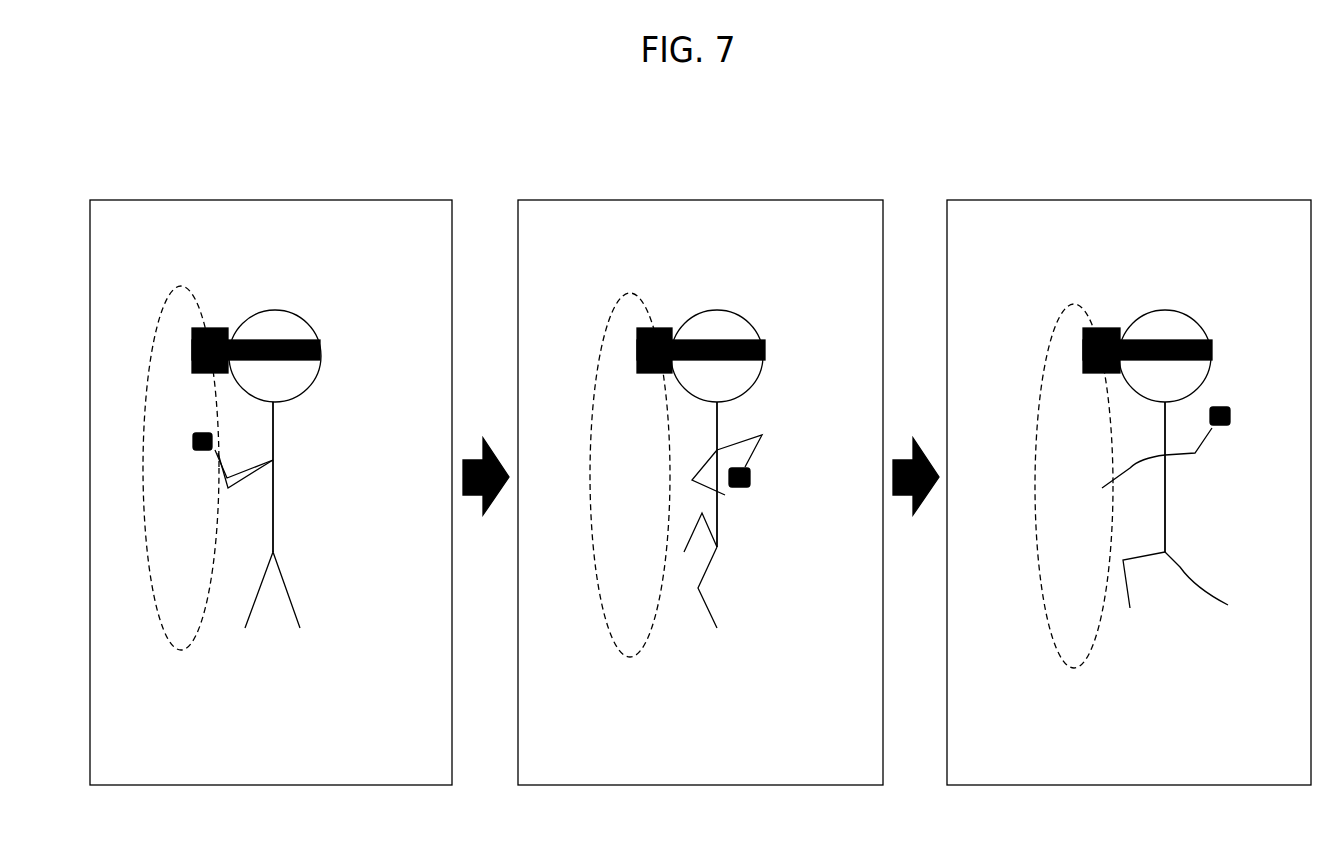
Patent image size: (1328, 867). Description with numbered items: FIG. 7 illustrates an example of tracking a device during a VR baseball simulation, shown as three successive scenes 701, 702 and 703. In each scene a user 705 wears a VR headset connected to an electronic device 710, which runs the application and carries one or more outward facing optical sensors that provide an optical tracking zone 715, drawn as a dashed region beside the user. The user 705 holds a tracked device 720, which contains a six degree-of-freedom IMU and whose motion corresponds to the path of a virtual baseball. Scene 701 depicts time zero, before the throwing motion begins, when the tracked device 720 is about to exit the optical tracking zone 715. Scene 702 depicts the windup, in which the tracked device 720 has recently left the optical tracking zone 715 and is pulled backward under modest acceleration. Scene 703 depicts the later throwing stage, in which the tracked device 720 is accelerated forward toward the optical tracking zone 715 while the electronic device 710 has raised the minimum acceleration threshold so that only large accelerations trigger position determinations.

The scene 701 is at (272, 196).
The scene 702 is at (708, 196).
The scene 703 is at (1119, 196).
The user 705 is at (291, 311).
The electronic device 710 is at (219, 328).
The optical tracking zone 715 is at (176, 285).
The tracked device 720 is at (203, 452).